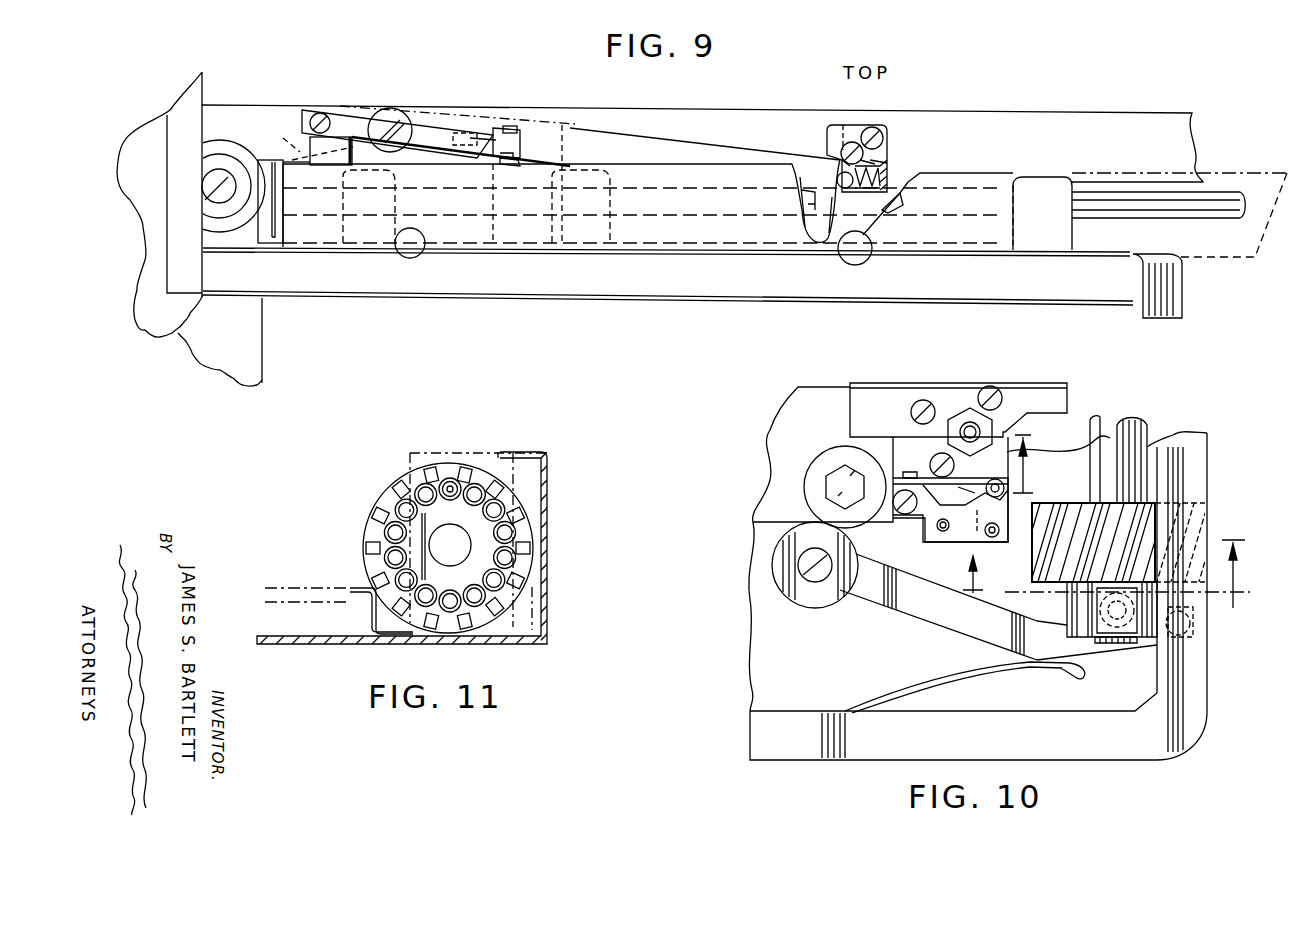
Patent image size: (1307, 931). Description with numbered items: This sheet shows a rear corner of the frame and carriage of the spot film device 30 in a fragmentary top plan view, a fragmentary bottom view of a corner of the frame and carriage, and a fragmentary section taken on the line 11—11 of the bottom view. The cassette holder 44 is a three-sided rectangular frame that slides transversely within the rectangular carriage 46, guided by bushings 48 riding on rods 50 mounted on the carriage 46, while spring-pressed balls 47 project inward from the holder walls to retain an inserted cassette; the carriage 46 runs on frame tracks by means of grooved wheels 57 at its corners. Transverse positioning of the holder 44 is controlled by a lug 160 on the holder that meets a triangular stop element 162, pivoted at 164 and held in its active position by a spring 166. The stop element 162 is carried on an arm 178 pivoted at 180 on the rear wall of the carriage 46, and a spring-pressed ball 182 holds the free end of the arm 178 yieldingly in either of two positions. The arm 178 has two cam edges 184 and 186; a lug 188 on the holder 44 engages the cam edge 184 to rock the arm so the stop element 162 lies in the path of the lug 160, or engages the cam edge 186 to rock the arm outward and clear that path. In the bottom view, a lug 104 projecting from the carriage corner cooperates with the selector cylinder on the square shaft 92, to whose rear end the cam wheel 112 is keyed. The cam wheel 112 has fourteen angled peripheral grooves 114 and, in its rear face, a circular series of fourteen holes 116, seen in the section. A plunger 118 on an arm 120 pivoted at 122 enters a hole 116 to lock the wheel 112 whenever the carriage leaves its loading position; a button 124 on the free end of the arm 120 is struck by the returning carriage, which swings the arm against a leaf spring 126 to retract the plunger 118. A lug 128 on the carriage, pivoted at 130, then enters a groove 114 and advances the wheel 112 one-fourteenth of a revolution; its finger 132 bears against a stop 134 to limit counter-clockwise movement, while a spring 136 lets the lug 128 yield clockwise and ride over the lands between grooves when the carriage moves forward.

In FIG. 9, the spot film device 30 is at (168, 128).
In FIG. 9, the cassette holder 44 is at (958, 182).
In FIG. 9, the carriage 46 is at (745, 135).
In FIG. 10, the carriage 46 is at (818, 415).
In FIG. 9, the spring-pressed balls 47 is at (413, 256).
In FIG. 9, the bushings 48 is at (355, 238).
In FIG. 9, the rods 50 is at (1200, 217).
In FIG. 9, the wheels 57 is at (226, 160).
In FIG. 9, the lug 160 is at (345, 135).
In FIG. 9, the stop element 162 is at (500, 143).
In FIG. 9, the pivot 164 is at (516, 128).
In FIG. 9, the spring 166 is at (430, 133).
In FIG. 9, the arm 178 is at (590, 145).
In FIG. 9, the pivot 180 is at (393, 110).
In FIG. 9, the spring-pressed ball 182 is at (857, 172).
In FIG. 9, the cam edge 184 is at (297, 158).
In FIG. 9, the cam edge 186 is at (800, 217).
In FIG. 9, the lug 188 is at (286, 150).
In FIG. 10, the square shaft 92 is at (1124, 428).
In FIG. 10, the lug 104 is at (1052, 395).
In FIG. 10, the cam wheel 112 is at (1070, 480).
In FIG. 11, the cam wheel 112 is at (372, 518).
In FIG. 11, the grooves 114 is at (522, 513).
In FIG. 11, the holes 116 is at (452, 488).
In FIG. 10, the plunger 118 is at (1075, 600).
In FIG. 10, the arm 120 is at (953, 617).
In FIG. 10, the pivot 122 is at (1195, 625).
In FIG. 10, the button 124 is at (803, 585).
In FIG. 10, the leaf spring 126 is at (958, 672).
In FIG. 10, the lug 128 is at (1015, 563).
In FIG. 10, the pivot 130 is at (989, 540).
In FIG. 10, the finger 132 is at (977, 492).
In FIG. 10, the stop 134 is at (940, 527).
In FIG. 10, the spring 136 is at (988, 398).
In FIG. 10, the section line 11 is at (1100, 521).